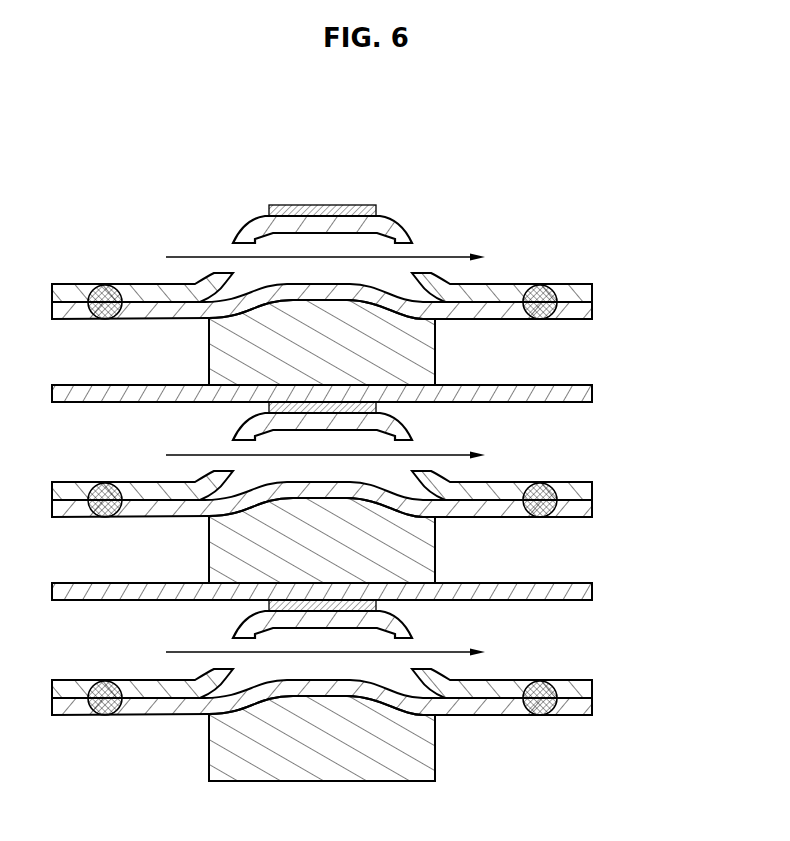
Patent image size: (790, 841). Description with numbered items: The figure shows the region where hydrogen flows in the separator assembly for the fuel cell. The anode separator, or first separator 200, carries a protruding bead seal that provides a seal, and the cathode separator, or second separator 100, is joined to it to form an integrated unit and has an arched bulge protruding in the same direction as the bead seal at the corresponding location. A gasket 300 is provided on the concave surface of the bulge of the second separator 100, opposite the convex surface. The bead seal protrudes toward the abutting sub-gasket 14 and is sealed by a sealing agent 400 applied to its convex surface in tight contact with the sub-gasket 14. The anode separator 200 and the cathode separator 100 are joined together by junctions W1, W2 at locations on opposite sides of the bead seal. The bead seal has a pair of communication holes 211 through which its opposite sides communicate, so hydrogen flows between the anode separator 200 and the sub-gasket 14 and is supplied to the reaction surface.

The sub-gasket 14 is at (583, 393).
The second separator 100 is at (583, 309).
The first separator 200 is at (583, 293).
The communication holes 211 is at (414, 250).
The gasket 300 is at (425, 345).
The sealing agent 400 is at (340, 205).
The junction W1 is at (543, 285).
The junction W2 is at (102, 285).